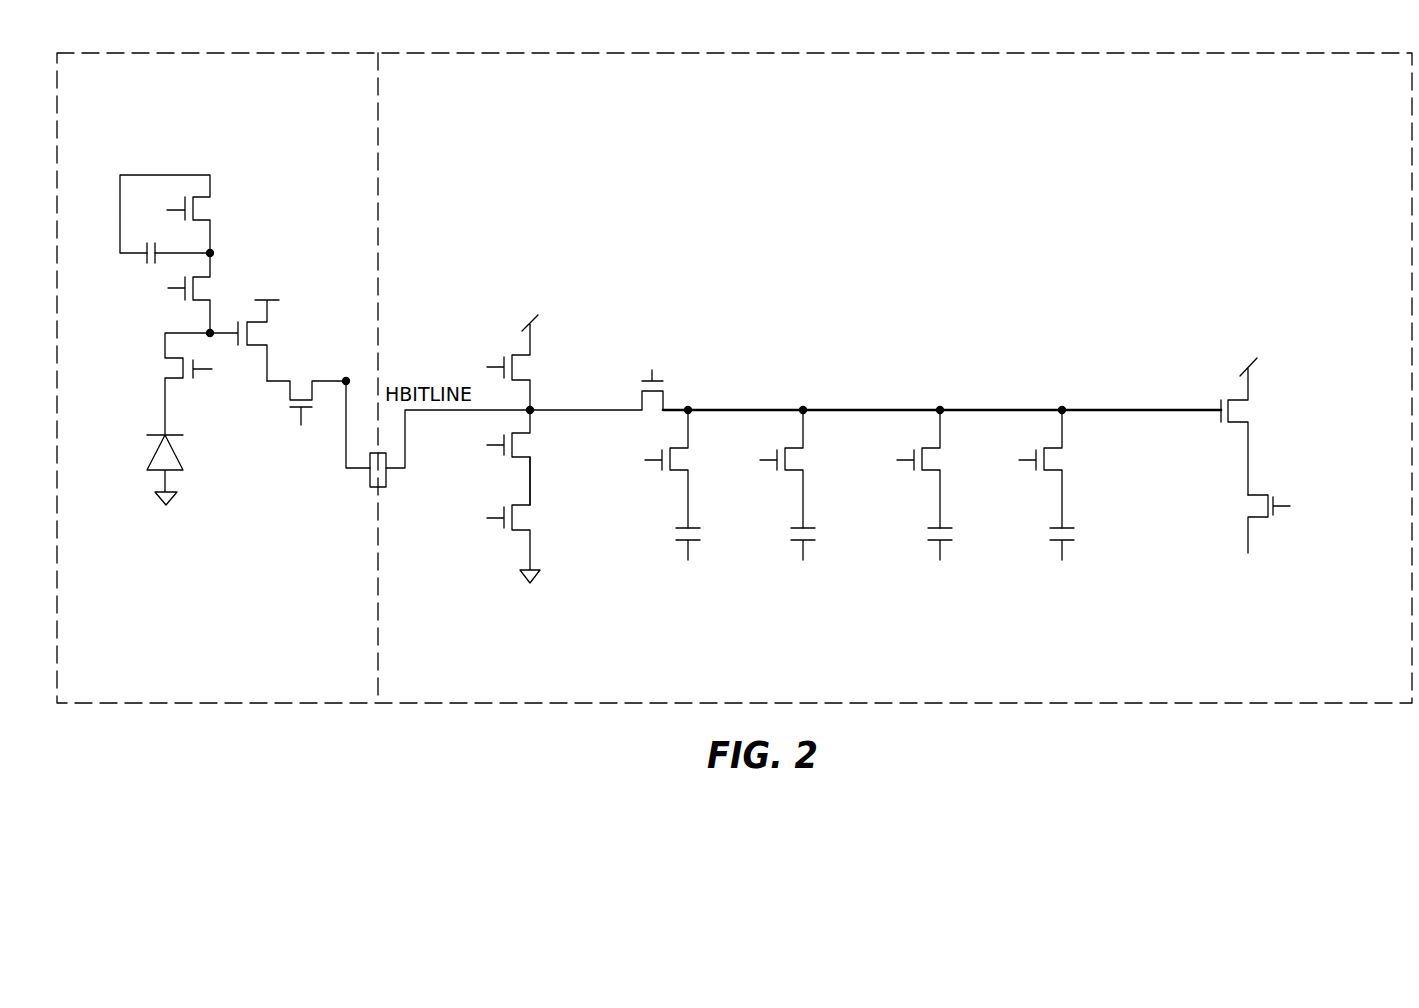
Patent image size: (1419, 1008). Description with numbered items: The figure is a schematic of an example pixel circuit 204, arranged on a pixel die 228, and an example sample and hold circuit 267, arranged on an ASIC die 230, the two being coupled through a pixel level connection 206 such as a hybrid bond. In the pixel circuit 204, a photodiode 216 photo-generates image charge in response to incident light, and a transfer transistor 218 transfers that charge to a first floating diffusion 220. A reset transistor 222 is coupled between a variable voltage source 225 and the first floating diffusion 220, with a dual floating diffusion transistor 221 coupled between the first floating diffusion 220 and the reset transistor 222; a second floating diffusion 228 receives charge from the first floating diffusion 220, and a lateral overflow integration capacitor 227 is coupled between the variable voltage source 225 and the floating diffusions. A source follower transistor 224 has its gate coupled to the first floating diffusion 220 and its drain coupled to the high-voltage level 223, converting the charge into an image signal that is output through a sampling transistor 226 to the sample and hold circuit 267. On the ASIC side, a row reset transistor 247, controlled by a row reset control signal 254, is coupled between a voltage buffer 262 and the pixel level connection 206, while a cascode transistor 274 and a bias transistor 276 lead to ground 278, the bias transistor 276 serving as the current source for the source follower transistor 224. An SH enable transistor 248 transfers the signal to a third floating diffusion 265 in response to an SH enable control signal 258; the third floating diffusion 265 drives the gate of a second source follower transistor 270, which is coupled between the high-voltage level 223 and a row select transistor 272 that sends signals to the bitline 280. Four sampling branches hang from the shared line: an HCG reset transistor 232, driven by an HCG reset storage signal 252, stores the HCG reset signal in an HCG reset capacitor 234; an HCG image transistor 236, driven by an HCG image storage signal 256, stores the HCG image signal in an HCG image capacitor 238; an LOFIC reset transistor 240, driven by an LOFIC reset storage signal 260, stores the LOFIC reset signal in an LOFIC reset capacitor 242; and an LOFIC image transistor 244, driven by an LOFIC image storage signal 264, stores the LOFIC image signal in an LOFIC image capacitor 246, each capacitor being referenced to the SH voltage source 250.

The pixel circuit 204 is at (216, 104).
The pixel level connection 206 is at (373, 488).
The photodiode 216 is at (112, 463).
The transfer transistor 218 is at (190, 407).
The first floating diffusion 220 is at (213, 370).
The dual floating diffusion transistor 221 is at (130, 308).
The reset transistor 222 is at (207, 207).
The high-voltage level AVDD 223 is at (298, 282).
The source follower transistor 224 is at (260, 333).
The variable voltage source VRFD 225 is at (220, 153).
The sampling transistor 226 is at (297, 465).
The lateral overflow integration capacitor 227 is at (140, 257).
The second floating diffusion 228 is at (313, 654).
The ASIC die 230 is at (455, 654).
The HCG reset transistor 232 is at (673, 477).
The HCG reset capacitor 234 is at (723, 545).
The HCG image transistor 236 is at (790, 473).
The HCG image capacitor 238 is at (838, 545).
The LOFIC reset transistor 240 is at (933, 473).
The LOFIC reset capacitor 242 is at (977, 545).
The LOFIC image transistor 244 is at (1053, 473).
The LOFIC image capacitor 246 is at (1108, 545).
The row reset transistor 247 is at (520, 367).
The SH enable transistor 248 is at (668, 398).
The SH voltage source VM 250 is at (692, 595).
The HCG reset storage signal SHR_H 252 is at (637, 453).
The row reset control signal RST_ROW 254 is at (420, 330).
The HCG image storage signal SHS_H 256 is at (732, 457).
The SH enable control signal PIXEN 258 is at (635, 317).
The LOFIC reset storage signal SHR_L 260 is at (860, 457).
The voltage buffer VD 262 is at (527, 285).
The LOFIC image storage signal SHS_L 264 is at (993, 422).
The third floating diffusion 265 is at (1172, 378).
The sample and hold circuit 267 is at (918, 134).
The second source follower transistor 270 is at (1298, 425).
The row select transistor 272 is at (1330, 520).
The cascode transistor 274 is at (518, 488).
The bias transistor 276 is at (518, 557).
The ground 278 is at (533, 620).
The bitline 280 is at (1245, 587).